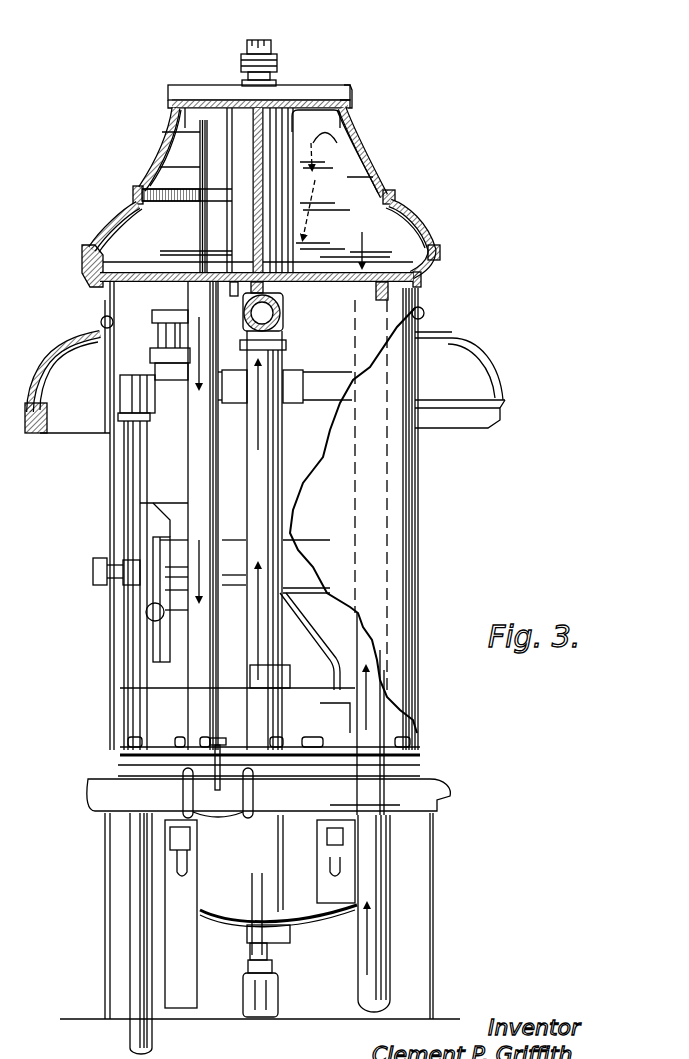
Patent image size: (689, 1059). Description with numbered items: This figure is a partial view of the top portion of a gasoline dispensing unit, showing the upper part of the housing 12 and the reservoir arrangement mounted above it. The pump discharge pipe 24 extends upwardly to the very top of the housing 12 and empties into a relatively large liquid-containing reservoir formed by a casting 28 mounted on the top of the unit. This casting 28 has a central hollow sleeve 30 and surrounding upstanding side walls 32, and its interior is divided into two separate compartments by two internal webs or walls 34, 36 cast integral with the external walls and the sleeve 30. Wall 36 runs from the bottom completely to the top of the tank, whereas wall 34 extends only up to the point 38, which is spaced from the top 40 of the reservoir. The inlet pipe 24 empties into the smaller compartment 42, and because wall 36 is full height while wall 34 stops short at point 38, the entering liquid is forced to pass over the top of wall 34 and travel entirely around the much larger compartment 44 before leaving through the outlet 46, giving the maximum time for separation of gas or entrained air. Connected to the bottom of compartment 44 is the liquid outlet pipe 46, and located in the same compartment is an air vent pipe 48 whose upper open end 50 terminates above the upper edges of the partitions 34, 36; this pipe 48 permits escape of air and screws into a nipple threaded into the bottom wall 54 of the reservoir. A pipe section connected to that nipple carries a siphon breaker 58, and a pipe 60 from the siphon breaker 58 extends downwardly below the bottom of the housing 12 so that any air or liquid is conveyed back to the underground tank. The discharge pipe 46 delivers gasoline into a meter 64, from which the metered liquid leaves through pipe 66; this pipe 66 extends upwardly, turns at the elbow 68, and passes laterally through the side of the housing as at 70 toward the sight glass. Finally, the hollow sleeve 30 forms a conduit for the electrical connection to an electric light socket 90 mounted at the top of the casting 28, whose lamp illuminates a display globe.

The housing 12 is at (407, 512).
The pump discharge pipe 24 is at (380, 298).
The casting 28 is at (418, 210).
The central hollow sleeve 30 is at (253, 143).
The upstanding side walls 32 is at (357, 157).
The internal web 34 is at (350, 183).
The internal web 36 is at (207, 128).
The point 38 is at (347, 120).
The top of the reservoir 40 is at (290, 98).
The compartment 42 is at (344, 204).
The compartment 44 is at (340, 88).
The liquid outlet pipe 46 is at (204, 429).
The air vent pipe 48 is at (172, 170).
The upper open end 50 is at (197, 134).
The bottom wall 54 is at (150, 290).
The siphon breaker 58 is at (155, 338).
The pipe 60 is at (138, 1033).
The meter 64 is at (268, 877).
The pipe 66 is at (270, 433).
The elbow 68 is at (286, 350).
The lateral passage through housing side 70 is at (284, 307).
The electric light socket 90 is at (258, 40).